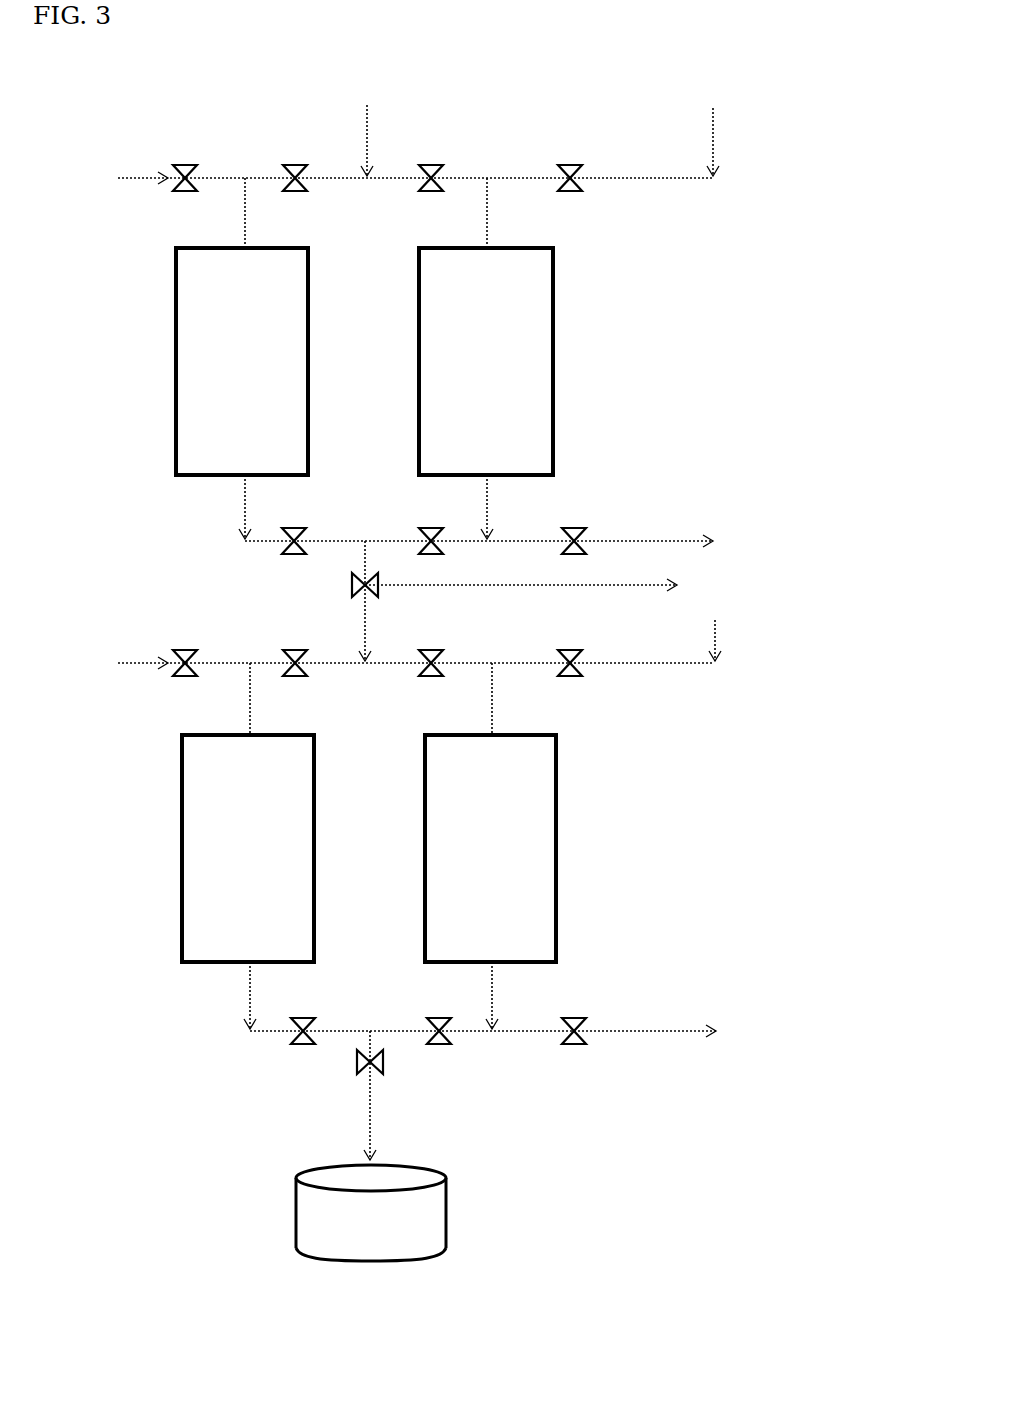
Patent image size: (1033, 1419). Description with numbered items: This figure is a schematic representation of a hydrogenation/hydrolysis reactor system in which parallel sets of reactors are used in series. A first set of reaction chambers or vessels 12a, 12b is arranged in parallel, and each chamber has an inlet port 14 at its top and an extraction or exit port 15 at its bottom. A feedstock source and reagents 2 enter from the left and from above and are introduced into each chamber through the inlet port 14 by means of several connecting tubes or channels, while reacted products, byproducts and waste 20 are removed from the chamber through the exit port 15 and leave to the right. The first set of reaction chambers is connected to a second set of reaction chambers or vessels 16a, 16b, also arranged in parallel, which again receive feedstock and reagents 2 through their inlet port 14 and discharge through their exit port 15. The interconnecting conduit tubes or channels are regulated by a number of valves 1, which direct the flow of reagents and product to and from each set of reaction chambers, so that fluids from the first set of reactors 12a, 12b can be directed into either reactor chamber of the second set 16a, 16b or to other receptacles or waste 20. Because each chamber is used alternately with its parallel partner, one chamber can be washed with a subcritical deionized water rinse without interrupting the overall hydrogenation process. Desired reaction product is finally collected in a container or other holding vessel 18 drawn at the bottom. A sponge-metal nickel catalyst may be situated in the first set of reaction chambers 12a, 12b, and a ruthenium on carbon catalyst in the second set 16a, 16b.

The valve 1 is at (288, 158).
The feedstock source and reagents 2 is at (399, 380).
The first set reaction chamber 12a is at (242, 361).
The first set reaction chamber 12b is at (486, 361).
The inlet port 14 is at (477, 243).
The extraction or exit port 15 is at (255, 468).
The second set reaction chamber 16a is at (248, 848).
The second set reaction chamber 16b is at (490, 848).
The container or holding vessel 18 is at (433, 1168).
The reacted products, byproducts and waste 20 is at (760, 797).